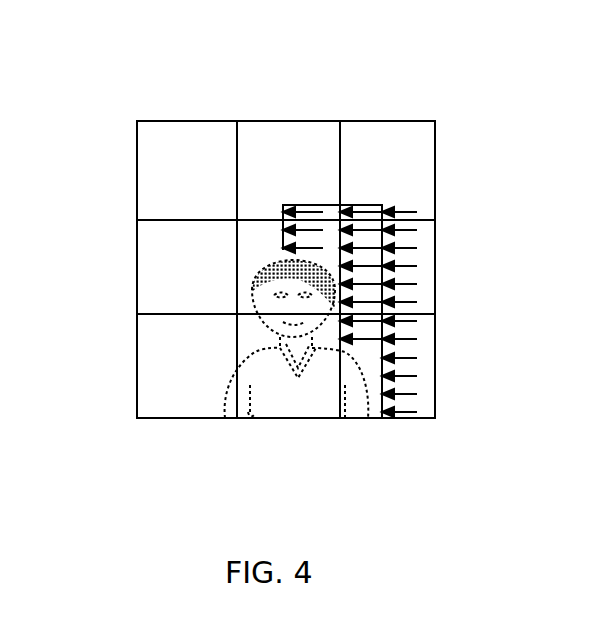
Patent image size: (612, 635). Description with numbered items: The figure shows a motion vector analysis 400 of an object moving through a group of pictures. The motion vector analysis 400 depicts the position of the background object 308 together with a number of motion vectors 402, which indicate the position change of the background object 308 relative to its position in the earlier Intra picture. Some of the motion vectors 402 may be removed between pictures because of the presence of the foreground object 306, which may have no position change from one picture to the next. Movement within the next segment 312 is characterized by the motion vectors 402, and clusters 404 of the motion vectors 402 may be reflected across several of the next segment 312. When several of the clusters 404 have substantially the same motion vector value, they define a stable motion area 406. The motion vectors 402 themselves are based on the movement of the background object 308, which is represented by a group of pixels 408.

The motion vector analysis 400 is at (141, 63).
The foreground object 306 is at (300, 398).
The next segment 312 is at (303, 176).
The background object 308 is at (313, 204).
The motion vectors 402 is at (406, 338).
The clusters 404 is at (440, 310).
The stable motion area 406 is at (385, 425).
The group of pixels 408 is at (278, 247).